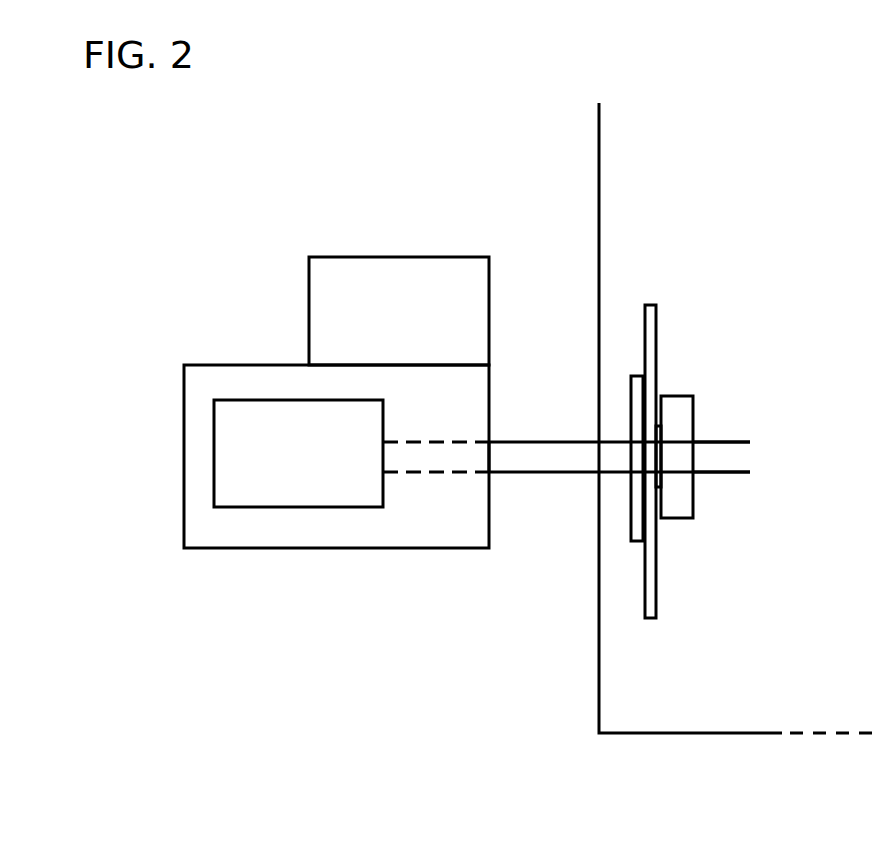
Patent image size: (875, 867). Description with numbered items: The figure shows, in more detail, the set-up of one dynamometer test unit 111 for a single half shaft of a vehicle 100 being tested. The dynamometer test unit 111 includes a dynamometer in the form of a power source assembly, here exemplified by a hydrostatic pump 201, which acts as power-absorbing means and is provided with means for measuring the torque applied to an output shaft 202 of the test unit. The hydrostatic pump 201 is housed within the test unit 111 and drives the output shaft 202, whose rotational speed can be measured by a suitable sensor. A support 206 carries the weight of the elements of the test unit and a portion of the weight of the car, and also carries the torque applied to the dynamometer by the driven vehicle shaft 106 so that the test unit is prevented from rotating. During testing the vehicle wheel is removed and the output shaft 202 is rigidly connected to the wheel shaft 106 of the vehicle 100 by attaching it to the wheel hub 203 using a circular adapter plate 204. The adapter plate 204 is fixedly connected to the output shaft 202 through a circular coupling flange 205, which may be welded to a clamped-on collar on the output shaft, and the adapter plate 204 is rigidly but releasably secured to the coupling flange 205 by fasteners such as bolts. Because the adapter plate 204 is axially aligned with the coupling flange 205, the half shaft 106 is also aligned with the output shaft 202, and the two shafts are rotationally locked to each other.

The vehicle 100 is at (675, 707).
The wheel shaft 106 is at (705, 440).
The dynamometer test unit 111 is at (263, 548).
The hydrostatic pump 201 is at (258, 420).
The output shaft 202 is at (584, 438).
The wheel hub 203 is at (673, 477).
The circular adapter plate 204 is at (648, 333).
The circular coupling flange 205 is at (637, 542).
The support 206 is at (396, 320).